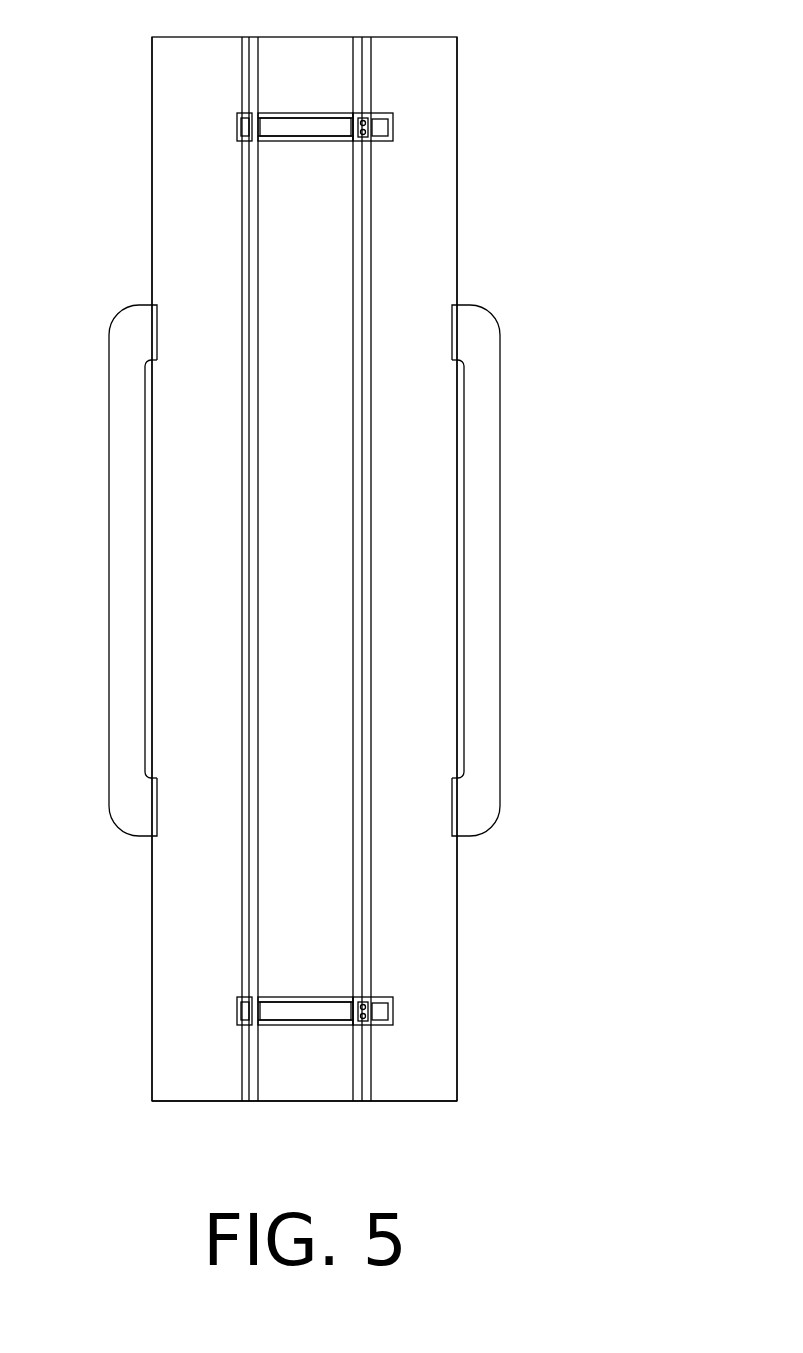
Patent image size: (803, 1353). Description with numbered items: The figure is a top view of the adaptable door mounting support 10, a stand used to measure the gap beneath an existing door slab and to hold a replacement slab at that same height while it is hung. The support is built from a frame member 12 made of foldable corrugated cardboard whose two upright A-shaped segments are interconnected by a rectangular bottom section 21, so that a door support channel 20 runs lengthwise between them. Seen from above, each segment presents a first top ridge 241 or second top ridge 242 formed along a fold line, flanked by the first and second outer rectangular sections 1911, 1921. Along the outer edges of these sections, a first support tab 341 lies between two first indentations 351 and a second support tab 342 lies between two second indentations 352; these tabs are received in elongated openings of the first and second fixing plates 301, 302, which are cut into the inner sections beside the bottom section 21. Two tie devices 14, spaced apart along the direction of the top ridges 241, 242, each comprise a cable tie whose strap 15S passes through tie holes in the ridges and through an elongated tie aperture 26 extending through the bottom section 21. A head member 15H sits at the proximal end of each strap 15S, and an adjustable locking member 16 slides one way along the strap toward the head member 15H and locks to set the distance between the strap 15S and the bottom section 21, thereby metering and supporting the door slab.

The adaptable door mounting support 10 is at (351, 599).
The frame member 12 is at (136, 930).
The tie device 14 is at (393, 104).
The head member 15H is at (237, 128).
The strap 15S is at (308, 128).
The adjustable locking member 16 is at (393, 123).
The first outer rectangular section 1911 is at (456, 185).
The second outer rectangular section 1921 is at (168, 205).
The door support channel 20 is at (323, 533).
The rectangular bottom section 21 is at (335, 1088).
The first top ridge 241 is at (372, 572).
The second top ridge 242 is at (242, 573).
The elongated tie aperture 26 is at (295, 143).
The first fixing plate 301 is at (500, 615).
The second fixing plate 302 is at (120, 618).
The first support tab 341 is at (457, 468).
The second support tab 342 is at (157, 468).
The first indentation 351 is at (455, 333).
The second indentation 352 is at (96, 570).